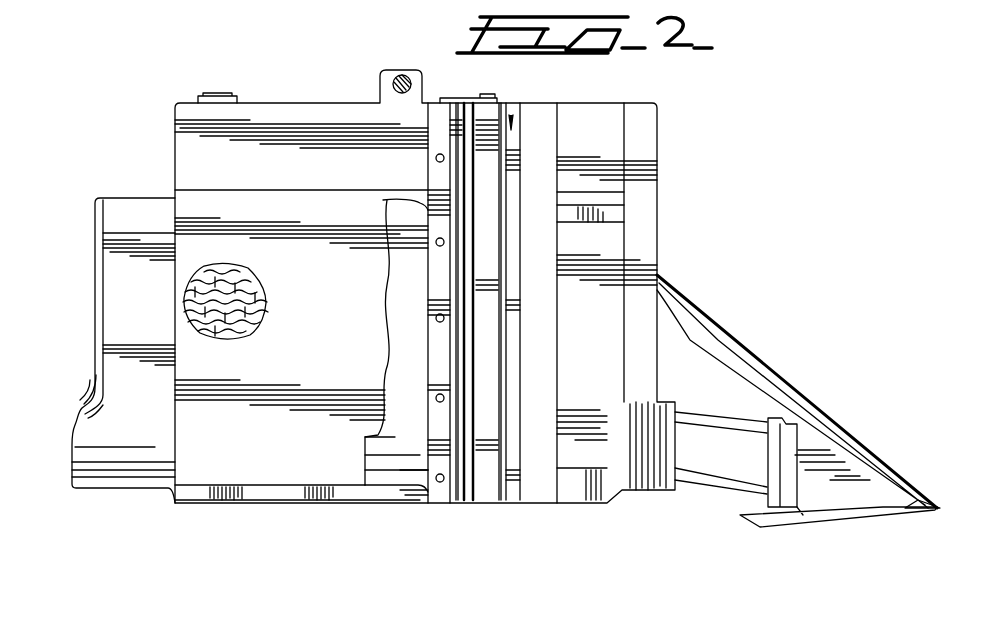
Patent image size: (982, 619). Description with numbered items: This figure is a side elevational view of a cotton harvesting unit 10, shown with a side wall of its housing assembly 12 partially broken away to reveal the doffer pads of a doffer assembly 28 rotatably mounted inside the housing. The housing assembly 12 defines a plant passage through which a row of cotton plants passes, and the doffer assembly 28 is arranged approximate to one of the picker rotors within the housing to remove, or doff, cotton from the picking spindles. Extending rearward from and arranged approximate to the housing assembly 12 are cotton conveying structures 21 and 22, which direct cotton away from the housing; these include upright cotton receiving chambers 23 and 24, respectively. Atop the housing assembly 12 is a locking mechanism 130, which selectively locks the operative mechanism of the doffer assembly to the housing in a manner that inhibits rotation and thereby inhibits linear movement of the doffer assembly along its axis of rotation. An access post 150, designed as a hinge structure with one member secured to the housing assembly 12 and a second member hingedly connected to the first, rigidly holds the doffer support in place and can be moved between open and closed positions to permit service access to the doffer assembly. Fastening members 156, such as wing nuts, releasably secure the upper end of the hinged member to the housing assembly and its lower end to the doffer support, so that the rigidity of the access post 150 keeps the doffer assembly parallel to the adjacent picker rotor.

The harvesting unit 10 is at (716, 217).
The housing assembly 12 is at (298, 100).
The cotton conveying structure 21 is at (402, 484).
The cotton conveying structure 22 is at (138, 190).
The upright cotton receiving chamber 23 is at (385, 359).
The upright cotton receiving chamber 24 is at (115, 352).
The doffer assembly 28 is at (273, 308).
The locking mechanism 130 is at (215, 92).
The access post 150 is at (485, 506).
The fastening members 156 is at (512, 122).